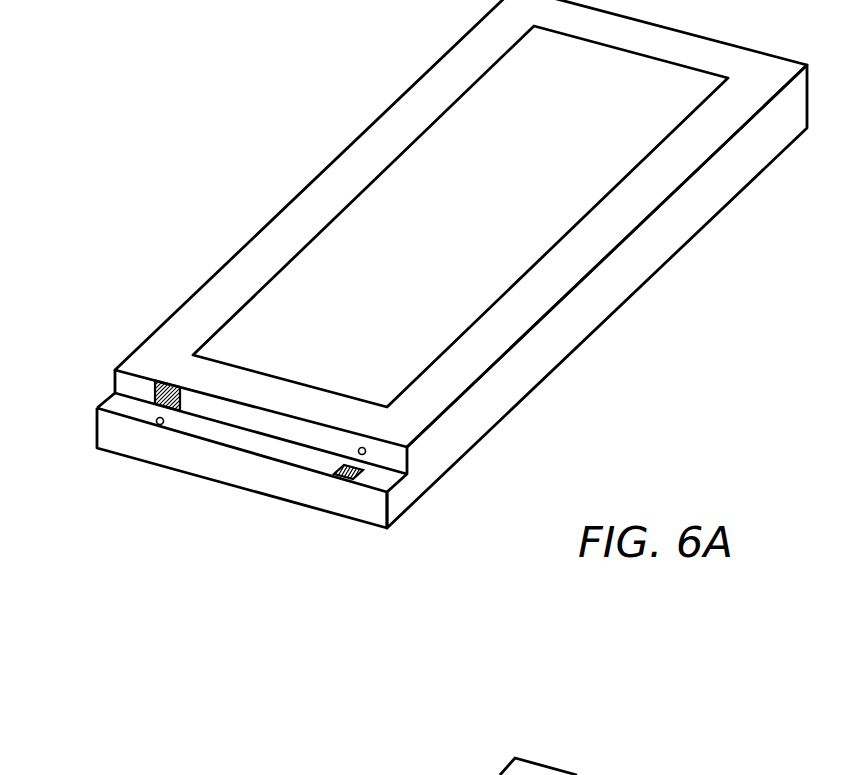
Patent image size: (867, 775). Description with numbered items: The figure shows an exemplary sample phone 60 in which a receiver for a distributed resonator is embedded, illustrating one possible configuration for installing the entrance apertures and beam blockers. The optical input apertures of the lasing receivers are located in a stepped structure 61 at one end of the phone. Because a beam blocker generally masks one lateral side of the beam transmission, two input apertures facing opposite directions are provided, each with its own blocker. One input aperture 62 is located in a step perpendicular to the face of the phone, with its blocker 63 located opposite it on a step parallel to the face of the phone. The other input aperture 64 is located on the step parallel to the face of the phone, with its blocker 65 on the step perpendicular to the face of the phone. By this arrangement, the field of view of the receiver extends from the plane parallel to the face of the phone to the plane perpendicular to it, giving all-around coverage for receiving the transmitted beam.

The sample phone 60 is at (318, 172).
The stepped structure 61 is at (98, 407).
The input aperture 62 is at (367, 451).
The blocker 63 is at (343, 482).
The input aperture 64 is at (160, 425).
The blocker 65 is at (153, 388).